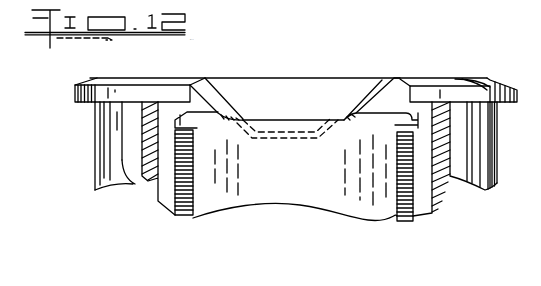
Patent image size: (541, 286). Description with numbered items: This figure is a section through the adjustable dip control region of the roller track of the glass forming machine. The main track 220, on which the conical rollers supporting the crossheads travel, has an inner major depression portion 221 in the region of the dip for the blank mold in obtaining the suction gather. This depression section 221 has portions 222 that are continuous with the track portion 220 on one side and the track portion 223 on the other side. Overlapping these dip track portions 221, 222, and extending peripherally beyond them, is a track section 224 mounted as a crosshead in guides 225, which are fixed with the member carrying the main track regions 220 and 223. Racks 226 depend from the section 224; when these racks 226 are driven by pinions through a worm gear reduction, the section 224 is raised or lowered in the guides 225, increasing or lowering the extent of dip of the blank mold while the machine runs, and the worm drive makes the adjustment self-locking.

The track 220 is at (110, 69).
The inner major depression portion 221 is at (273, 138).
The portions 222 is at (241, 86).
The track portion 223 is at (416, 66).
The track section 224 is at (268, 116).
The guides 225 is at (146, 182).
The racks 226 is at (397, 176).